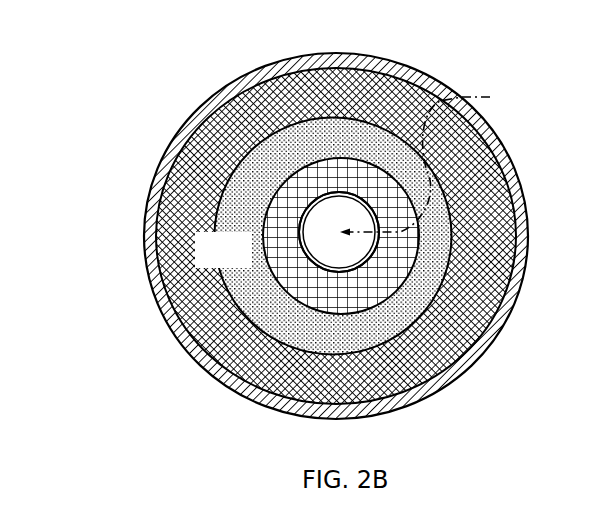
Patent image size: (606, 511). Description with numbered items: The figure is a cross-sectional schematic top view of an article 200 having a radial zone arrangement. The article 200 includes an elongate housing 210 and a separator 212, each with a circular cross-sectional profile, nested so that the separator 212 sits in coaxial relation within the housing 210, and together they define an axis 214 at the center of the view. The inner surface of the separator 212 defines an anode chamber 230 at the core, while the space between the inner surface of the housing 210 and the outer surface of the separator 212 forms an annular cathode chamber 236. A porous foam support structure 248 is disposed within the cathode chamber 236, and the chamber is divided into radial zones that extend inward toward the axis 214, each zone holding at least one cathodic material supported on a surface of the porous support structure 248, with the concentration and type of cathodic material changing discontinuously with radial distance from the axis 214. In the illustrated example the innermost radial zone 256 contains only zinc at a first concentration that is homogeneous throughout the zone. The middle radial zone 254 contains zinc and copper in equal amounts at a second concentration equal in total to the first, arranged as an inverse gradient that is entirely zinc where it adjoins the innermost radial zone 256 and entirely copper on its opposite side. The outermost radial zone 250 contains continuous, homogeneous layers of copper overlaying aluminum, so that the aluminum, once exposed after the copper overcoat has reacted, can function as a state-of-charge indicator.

The article 200 is at (95, 232).
The elongate housing 210 is at (335, 236).
The separator 212 is at (374, 251).
The axis 214 is at (436, 163).
The anode chamber 230 is at (339, 232).
The cathode chamber 236 is at (250, 261).
The porous foam support structure 248 is at (232, 390).
The outermost radial zone 250 is at (251, 110).
The middle radial zone 254 is at (265, 152).
The innermost radial zone 256 is at (287, 210).